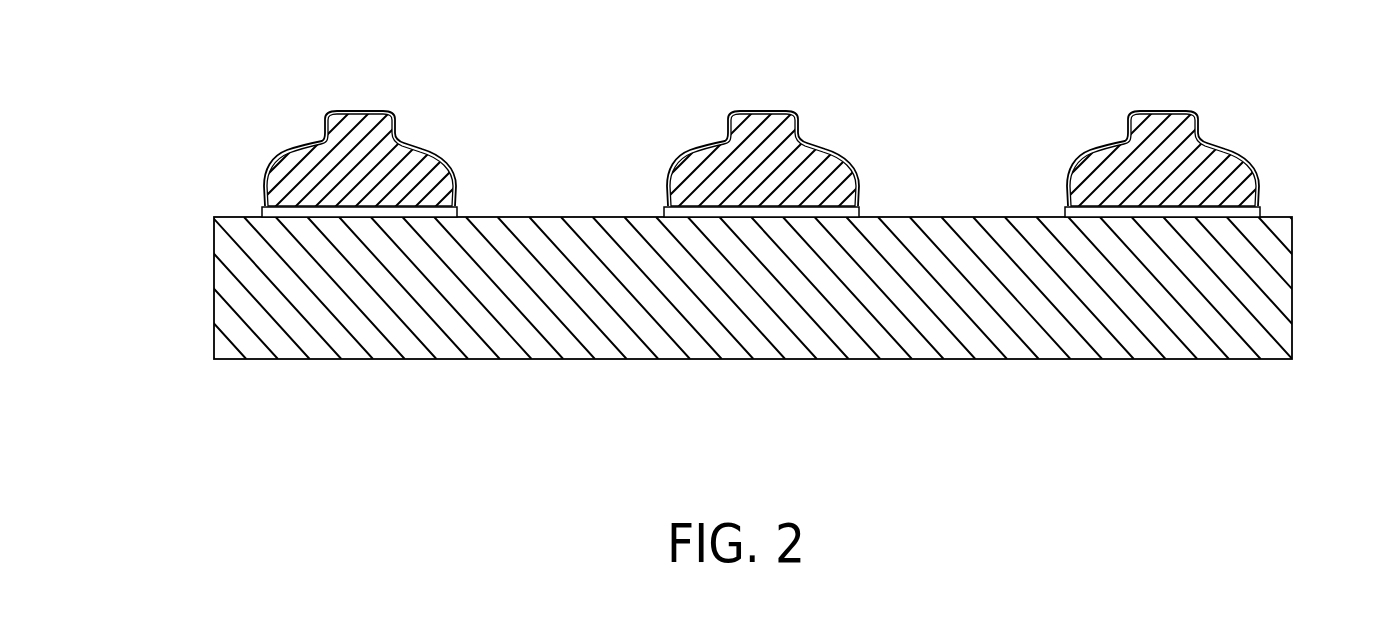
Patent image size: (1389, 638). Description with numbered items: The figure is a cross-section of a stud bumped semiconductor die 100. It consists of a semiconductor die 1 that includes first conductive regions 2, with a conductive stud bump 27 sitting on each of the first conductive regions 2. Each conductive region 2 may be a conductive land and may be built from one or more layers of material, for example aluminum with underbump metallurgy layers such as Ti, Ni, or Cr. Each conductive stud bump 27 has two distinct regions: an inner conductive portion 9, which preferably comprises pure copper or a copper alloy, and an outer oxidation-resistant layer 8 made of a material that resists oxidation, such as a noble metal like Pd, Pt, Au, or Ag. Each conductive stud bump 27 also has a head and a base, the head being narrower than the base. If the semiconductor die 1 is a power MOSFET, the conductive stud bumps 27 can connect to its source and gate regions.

The stud bumped semiconductor die 100 is at (721, 189).
The semiconductor die 1 is at (1282, 288).
The first conductive region 2 is at (858, 213).
The conductive stud bump 27 is at (808, 115).
The outer oxidation-resistant layer 8 is at (748, 113).
The inner conductive portion 9 is at (806, 152).